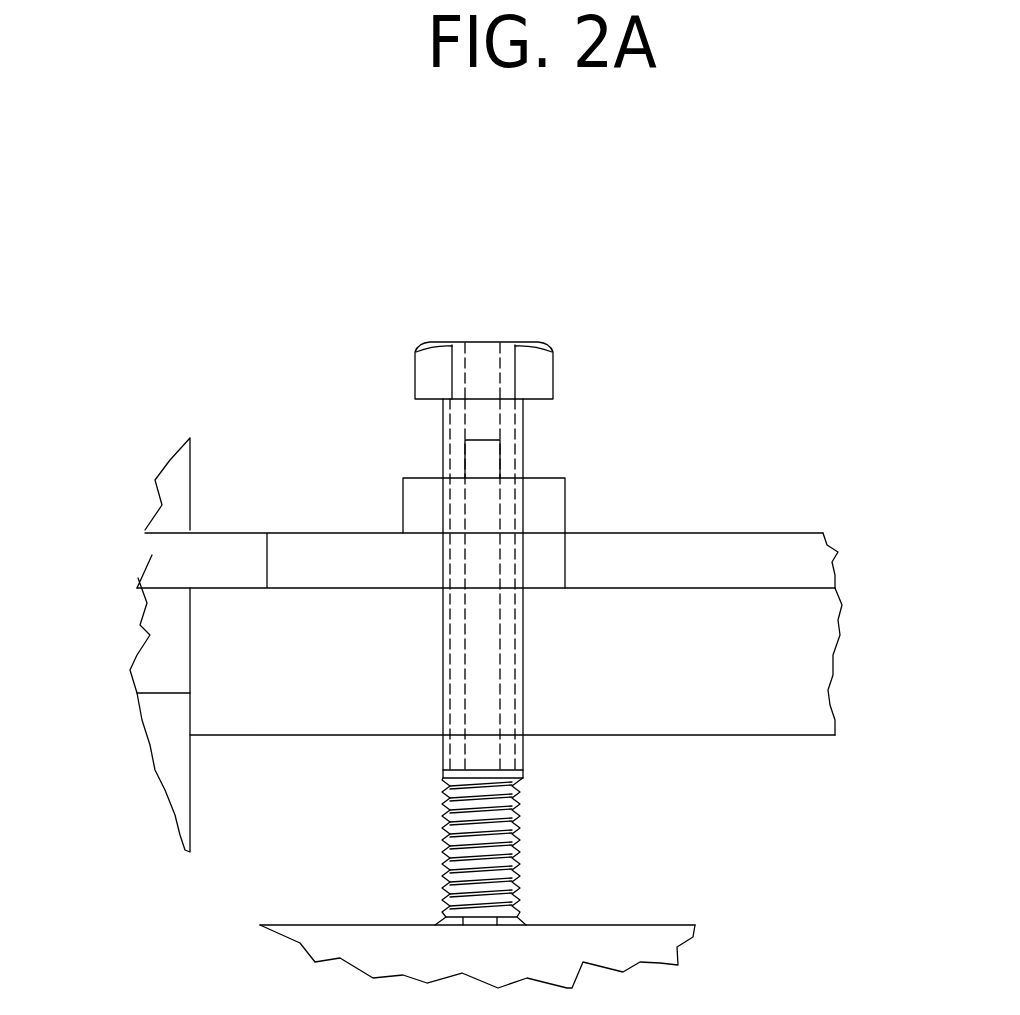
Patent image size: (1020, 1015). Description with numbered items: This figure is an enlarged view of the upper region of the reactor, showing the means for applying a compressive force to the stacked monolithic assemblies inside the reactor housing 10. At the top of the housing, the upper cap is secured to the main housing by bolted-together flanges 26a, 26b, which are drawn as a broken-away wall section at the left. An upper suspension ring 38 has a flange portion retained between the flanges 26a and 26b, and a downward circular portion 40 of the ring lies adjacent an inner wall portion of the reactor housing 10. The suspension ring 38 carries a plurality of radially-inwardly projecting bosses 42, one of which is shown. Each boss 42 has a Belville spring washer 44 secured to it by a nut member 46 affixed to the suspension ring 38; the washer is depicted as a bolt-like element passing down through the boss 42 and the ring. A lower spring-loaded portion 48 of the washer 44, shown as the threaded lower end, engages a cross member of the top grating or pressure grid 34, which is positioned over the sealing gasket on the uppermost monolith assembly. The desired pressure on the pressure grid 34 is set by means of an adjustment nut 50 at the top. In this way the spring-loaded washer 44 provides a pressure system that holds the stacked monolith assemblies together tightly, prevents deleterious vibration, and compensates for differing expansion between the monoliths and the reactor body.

The reactor housing 10 is at (170, 730).
The flange 26a is at (168, 647).
The flange 26b is at (177, 488).
The pressure grid 34 is at (640, 938).
The upper suspension ring 38 is at (170, 562).
The downward circular portion 40 is at (790, 677).
The boss 42 is at (550, 560).
The Belville spring washer 44 is at (523, 652).
The nut member 46 is at (548, 507).
The lower spring-loaded portion 48 is at (517, 843).
The adjustment nut 50 is at (537, 358).